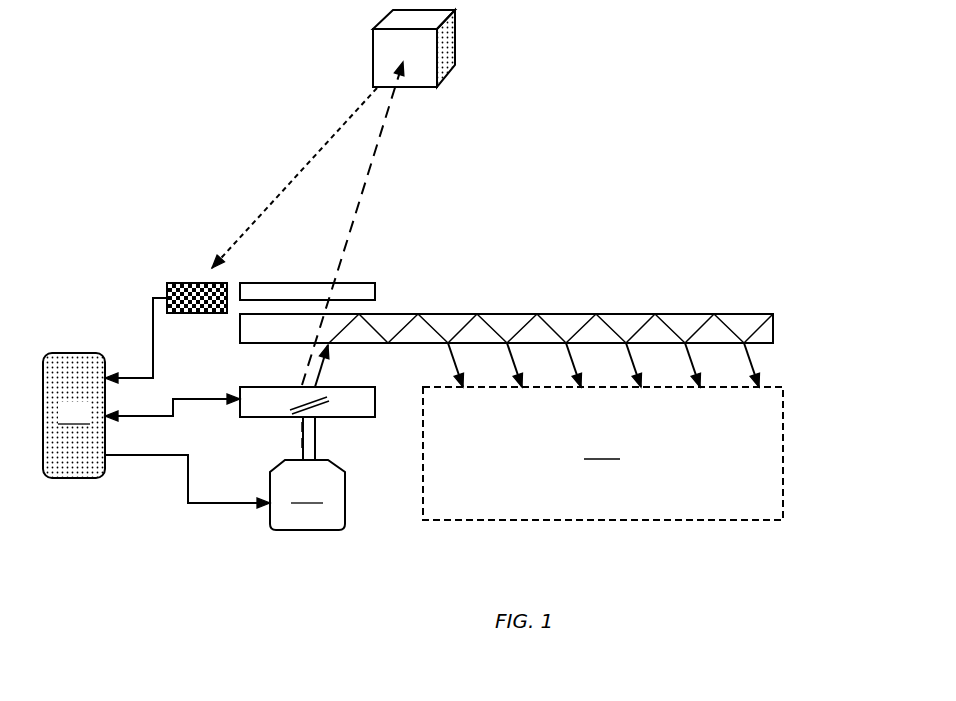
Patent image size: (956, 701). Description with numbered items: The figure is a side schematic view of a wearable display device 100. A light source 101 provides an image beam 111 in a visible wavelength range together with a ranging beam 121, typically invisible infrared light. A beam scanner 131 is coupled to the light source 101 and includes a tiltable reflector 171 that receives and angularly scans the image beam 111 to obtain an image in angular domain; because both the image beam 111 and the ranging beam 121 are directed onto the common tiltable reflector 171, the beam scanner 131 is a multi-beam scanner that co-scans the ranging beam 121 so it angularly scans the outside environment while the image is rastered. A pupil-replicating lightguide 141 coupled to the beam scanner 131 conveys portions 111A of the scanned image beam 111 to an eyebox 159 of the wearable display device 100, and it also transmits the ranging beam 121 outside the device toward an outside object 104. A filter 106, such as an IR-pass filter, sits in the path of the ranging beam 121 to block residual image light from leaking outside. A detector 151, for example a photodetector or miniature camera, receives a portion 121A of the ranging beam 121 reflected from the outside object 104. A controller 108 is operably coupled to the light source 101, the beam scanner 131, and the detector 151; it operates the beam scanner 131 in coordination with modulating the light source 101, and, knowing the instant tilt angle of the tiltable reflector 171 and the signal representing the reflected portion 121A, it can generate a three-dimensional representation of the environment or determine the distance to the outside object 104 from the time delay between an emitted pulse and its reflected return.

The wearable display device 100 is at (703, 200).
The outside object 104 is at (443, 50).
The ranging beam 121 is at (373, 165).
The reflected portion of ranging beam 121A is at (330, 140).
The filter 106 is at (298, 292).
The detector 151 is at (188, 287).
The controller 108 is at (156, 403).
The beam scanner 131 is at (343, 397).
The tiltable reflector 171 is at (295, 400).
The image beam 111 is at (317, 437).
The light source 101 is at (307, 495).
The pupil-replicating lightguide 141 is at (565, 312).
The portions of scanned image beam 111A is at (750, 362).
The eyebox 159 is at (603, 453).